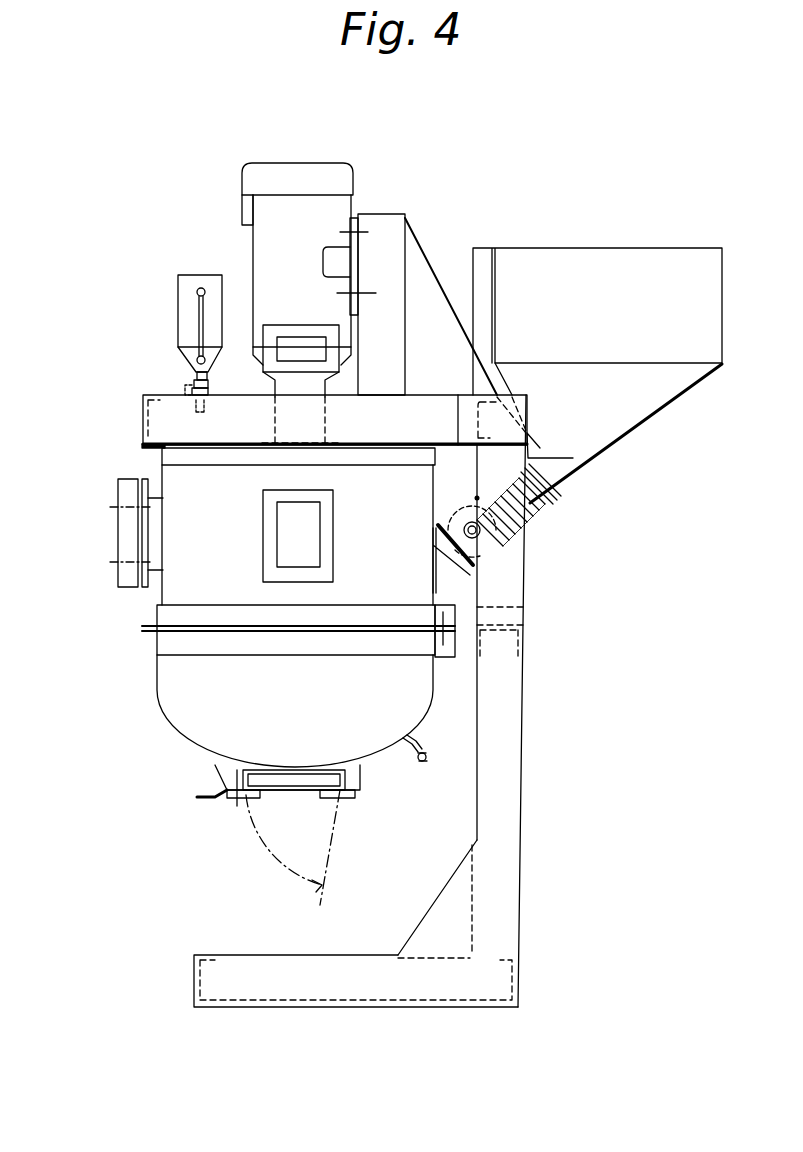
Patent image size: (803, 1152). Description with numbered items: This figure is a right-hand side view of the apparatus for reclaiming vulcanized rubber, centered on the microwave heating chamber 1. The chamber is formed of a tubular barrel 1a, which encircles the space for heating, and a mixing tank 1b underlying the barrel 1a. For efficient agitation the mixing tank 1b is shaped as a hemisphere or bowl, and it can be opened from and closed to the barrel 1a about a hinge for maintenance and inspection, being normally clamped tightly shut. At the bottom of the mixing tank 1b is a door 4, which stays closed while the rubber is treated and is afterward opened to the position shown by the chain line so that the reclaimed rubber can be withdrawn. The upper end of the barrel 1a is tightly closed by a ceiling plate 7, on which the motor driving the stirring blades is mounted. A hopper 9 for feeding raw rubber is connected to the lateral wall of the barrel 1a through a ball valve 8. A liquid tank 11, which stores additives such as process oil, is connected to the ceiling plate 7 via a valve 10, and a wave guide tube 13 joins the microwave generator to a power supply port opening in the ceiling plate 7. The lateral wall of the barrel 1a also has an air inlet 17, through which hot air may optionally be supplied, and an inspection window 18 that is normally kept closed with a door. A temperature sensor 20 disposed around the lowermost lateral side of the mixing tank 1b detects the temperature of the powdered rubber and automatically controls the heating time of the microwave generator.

The microwave heating chamber 1 is at (50, 592).
The tubular barrel 1a is at (254, 561).
The mixing tank 1b is at (259, 767).
The door 4 is at (282, 790).
The ceiling plate 7 is at (178, 447).
The ball valve 8 is at (470, 543).
The hopper 9 is at (628, 410).
The valve 10 is at (186, 386).
The liquid tank 11 is at (187, 322).
The wave guide tube 13 is at (289, 340).
The air inlet 17 is at (282, 551).
The inspection window 18 is at (128, 535).
The temperature sensor 20 is at (426, 761).